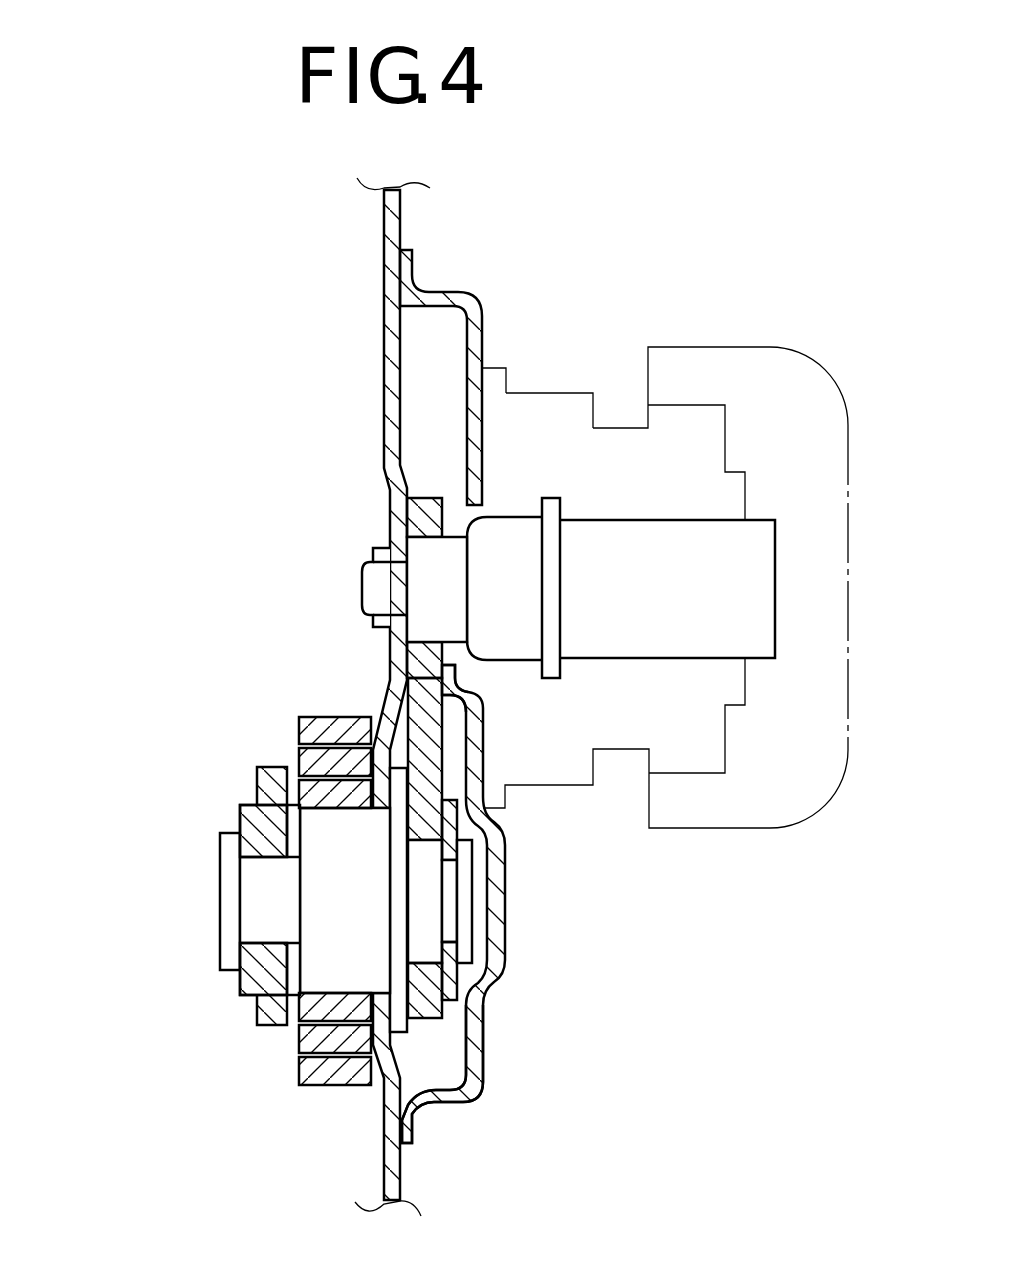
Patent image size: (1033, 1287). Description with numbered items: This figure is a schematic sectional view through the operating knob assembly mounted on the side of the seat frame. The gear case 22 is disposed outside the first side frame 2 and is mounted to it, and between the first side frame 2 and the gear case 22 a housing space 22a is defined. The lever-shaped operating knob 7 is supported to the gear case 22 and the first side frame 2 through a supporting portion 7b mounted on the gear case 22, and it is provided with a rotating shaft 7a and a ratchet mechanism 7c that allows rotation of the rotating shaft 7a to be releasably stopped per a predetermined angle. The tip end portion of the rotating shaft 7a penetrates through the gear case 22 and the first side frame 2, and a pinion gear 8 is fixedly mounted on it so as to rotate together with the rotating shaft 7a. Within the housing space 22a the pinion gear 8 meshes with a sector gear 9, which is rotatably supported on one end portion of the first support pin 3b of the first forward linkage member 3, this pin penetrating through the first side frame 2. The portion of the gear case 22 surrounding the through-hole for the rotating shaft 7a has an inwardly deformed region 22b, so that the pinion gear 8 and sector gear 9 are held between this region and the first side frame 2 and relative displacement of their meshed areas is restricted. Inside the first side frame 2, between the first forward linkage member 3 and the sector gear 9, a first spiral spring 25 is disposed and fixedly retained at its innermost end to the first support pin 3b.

The first side frame 2 is at (383, 1148).
The first forward linkage member 3 is at (258, 778).
The first support pin 3b is at (220, 900).
The operating knob 7 is at (800, 352).
The rotating shaft 7a is at (690, 517).
The supporting portion 7b is at (507, 385).
The ratchet mechanism 7c is at (577, 392).
The pinion gear 8 is at (430, 497).
The sector gear 9 is at (407, 712).
The gear case 22 is at (505, 927).
The housing space 22a is at (443, 1067).
The inwardly deformed region 22b is at (452, 672).
The first spiral spring 25 is at (298, 1057).